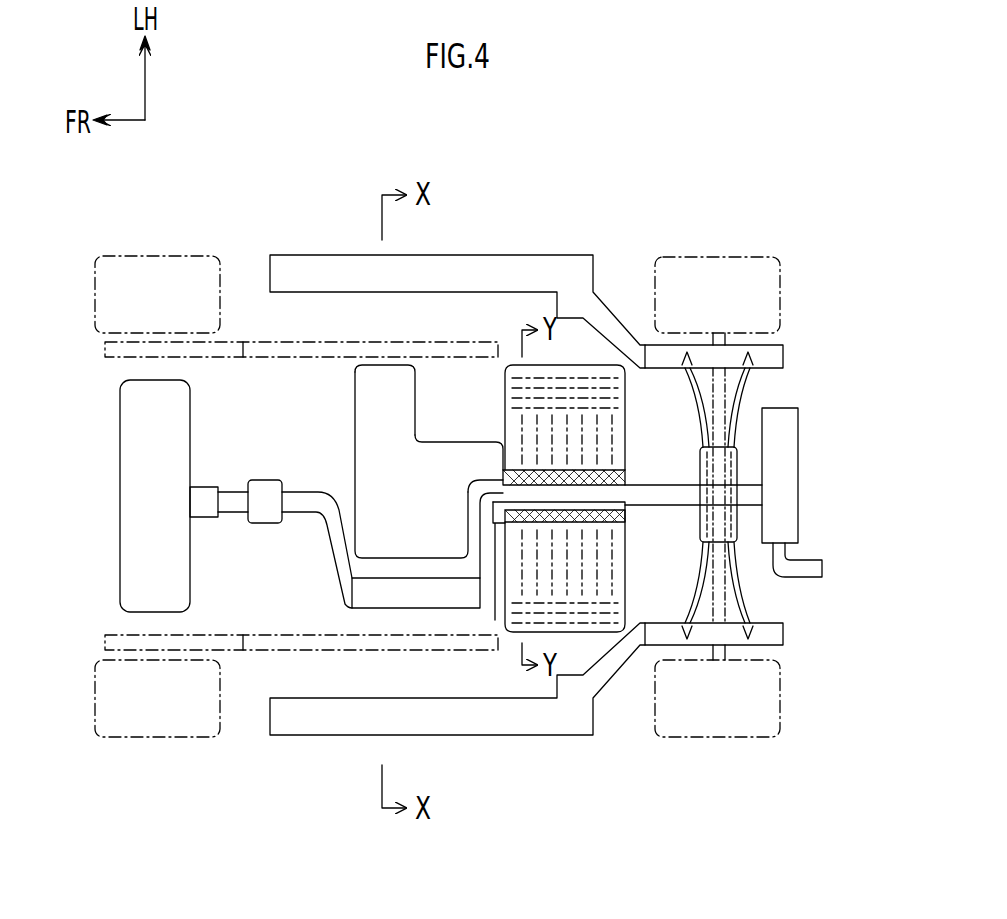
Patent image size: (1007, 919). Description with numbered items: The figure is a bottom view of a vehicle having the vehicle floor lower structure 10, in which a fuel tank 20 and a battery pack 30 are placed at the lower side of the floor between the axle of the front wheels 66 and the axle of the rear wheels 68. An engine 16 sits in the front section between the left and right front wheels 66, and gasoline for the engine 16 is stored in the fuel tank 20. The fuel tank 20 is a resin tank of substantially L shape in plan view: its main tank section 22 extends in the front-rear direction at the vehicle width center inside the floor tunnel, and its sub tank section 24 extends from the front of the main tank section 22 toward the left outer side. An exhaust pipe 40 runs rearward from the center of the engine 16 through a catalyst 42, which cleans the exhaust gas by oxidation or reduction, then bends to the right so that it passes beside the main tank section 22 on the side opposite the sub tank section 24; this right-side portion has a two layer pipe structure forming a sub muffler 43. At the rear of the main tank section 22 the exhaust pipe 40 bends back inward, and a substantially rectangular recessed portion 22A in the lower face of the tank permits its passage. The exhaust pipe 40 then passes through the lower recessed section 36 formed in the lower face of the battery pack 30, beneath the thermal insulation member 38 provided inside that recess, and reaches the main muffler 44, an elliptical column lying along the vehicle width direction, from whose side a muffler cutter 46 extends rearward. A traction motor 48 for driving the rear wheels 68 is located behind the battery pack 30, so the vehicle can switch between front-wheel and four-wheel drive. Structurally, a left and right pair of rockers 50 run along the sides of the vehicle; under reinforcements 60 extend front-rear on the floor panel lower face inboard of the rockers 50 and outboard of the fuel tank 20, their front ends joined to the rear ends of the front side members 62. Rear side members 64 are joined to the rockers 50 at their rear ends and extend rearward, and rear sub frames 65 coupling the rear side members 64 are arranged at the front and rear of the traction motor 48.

The vehicle floor lower structure 10 is at (378, 459).
The engine 16 is at (120, 492).
The fuel tank 20 is at (350, 445).
The main tank section 22 is at (448, 458).
The recessed portion 22A is at (497, 545).
The sub tank section 24 is at (398, 395).
The battery pack 30 is at (631, 450).
The lower recessed section 36 is at (578, 478).
The thermal insulation member 38 is at (622, 513).
The exhaust pipe 40 is at (328, 560).
The catalyst 42 is at (264, 480).
The sub muffler 43 is at (354, 620).
The main muffler 44 is at (798, 481).
The muffler cutter 46 is at (822, 568).
The traction motor 48 is at (734, 450).
The rockers 50 is at (497, 255).
The under reinforcements 60 is at (298, 342).
The front side members 62 is at (105, 345).
The rear side members 64 is at (783, 357).
The rear sub frames 65 is at (696, 590).
The front wheels 66 is at (138, 257).
The rear wheels 68 is at (698, 257).